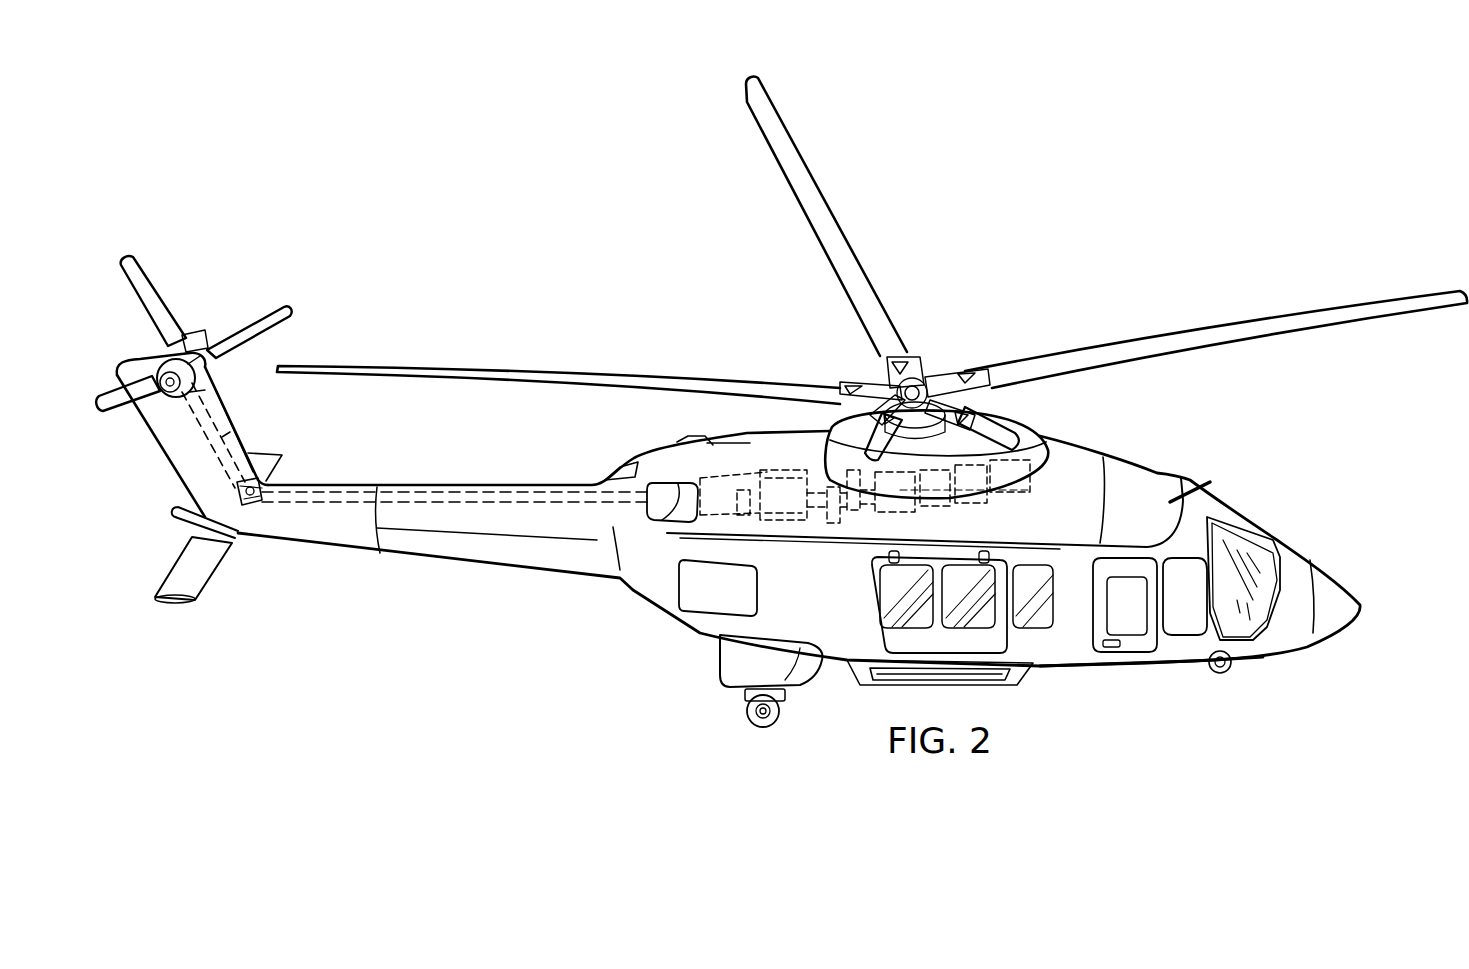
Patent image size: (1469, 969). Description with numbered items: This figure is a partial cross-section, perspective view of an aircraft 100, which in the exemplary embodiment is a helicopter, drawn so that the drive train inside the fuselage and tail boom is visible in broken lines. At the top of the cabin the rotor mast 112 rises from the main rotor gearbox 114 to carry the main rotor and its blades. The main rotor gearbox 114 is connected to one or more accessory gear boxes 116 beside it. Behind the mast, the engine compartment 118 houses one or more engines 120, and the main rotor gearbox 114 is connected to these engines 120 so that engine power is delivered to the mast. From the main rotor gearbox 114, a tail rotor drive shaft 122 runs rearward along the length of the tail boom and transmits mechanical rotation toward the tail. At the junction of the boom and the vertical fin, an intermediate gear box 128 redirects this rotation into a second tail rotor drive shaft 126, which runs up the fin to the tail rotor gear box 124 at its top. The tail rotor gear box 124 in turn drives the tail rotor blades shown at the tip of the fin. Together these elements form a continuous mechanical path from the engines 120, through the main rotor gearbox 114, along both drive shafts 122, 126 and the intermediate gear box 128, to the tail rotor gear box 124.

The aircraft 100 is at (1148, 127).
The rotor mast 112 is at (875, 497).
The main rotor gearbox 114 is at (918, 490).
The accessory gear boxes 116 is at (1003, 495).
The engine compartment 118 is at (782, 460).
The engines 120 is at (773, 507).
The tail rotor drive shaft 122 is at (467, 490).
The tail rotor gear box 124 is at (160, 352).
The tail rotor drive shaft 126 is at (235, 437).
The intermediate gear box 128 is at (257, 517).